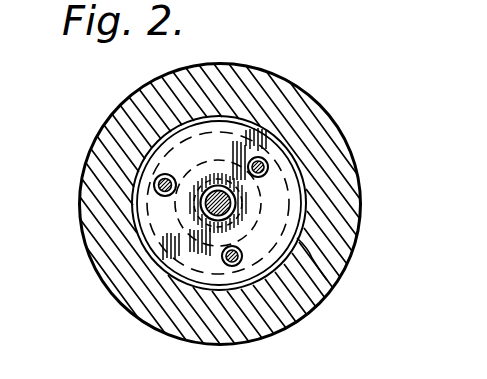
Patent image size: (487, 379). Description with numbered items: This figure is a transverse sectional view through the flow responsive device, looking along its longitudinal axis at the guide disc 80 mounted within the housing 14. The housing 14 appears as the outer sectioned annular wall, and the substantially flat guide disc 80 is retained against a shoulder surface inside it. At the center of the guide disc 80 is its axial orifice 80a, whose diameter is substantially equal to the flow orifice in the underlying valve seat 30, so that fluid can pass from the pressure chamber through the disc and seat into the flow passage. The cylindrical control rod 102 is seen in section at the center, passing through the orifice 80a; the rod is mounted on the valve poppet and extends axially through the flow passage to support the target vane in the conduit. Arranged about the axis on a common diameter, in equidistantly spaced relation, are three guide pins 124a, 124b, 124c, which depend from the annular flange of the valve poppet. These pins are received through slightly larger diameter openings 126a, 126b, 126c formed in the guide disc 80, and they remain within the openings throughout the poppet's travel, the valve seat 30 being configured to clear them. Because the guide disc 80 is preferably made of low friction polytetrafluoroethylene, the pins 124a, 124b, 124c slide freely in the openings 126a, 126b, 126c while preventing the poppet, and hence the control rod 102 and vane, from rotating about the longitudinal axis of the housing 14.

The housing 14 is at (130, 108).
The valve seat 30 is at (218, 161).
The guide disc 80 is at (334, 287).
The axial orifice 80a is at (205, 215).
The control rod 102 is at (207, 214).
The guide pin 124a is at (160, 182).
The guide pin 124b is at (268, 163).
The guide pin 124c is at (232, 266).
The opening 126a is at (154, 186).
The opening 126b is at (263, 158).
The opening 126c is at (239, 260).